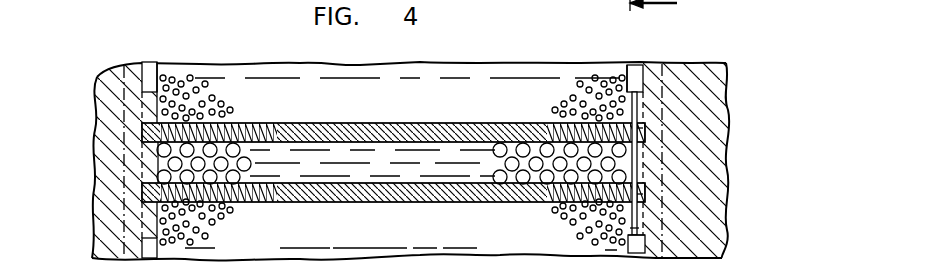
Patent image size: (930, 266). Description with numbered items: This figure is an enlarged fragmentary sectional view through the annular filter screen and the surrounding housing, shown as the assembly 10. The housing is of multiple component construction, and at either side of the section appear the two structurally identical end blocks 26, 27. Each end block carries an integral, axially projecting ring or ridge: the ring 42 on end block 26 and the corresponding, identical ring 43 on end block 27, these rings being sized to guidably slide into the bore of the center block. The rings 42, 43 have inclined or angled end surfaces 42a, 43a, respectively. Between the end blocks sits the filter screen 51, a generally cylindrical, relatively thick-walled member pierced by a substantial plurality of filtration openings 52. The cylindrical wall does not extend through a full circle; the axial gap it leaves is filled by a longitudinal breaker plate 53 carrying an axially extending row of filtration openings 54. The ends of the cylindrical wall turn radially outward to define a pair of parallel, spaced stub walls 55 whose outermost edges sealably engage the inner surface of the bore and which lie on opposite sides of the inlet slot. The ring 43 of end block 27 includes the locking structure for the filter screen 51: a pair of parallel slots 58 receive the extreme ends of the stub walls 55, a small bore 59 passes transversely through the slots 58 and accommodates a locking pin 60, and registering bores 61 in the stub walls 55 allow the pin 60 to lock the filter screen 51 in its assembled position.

The assembly 10 is at (653, 19).
The end block 26 is at (97, 77).
The end block 27 is at (712, 74).
The ring 42 is at (132, 78).
The inclined end surface 42a is at (157, 70).
The ring 43 is at (652, 72).
The inclined end surface 43a is at (627, 66).
The filter screen 51 is at (466, 82).
The filtration openings 52 is at (190, 100).
The breaker plate 53 is at (375, 155).
The filtration openings 54 is at (240, 177).
The stub walls 55 is at (335, 125).
The slots 58 is at (643, 146).
The bore 59 is at (633, 230).
The locking pin 60 is at (635, 219).
The registering bores 61 is at (643, 130).